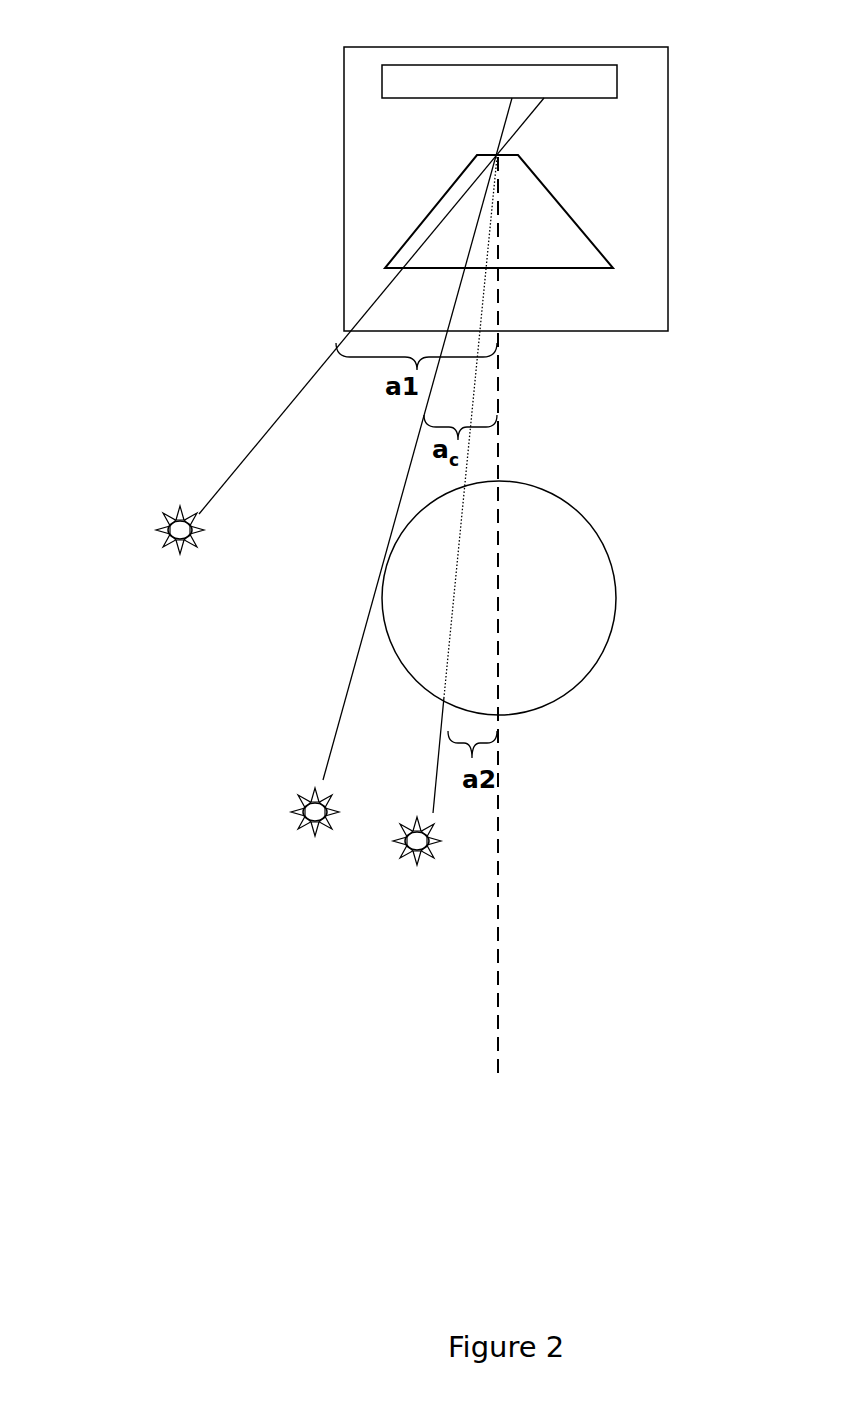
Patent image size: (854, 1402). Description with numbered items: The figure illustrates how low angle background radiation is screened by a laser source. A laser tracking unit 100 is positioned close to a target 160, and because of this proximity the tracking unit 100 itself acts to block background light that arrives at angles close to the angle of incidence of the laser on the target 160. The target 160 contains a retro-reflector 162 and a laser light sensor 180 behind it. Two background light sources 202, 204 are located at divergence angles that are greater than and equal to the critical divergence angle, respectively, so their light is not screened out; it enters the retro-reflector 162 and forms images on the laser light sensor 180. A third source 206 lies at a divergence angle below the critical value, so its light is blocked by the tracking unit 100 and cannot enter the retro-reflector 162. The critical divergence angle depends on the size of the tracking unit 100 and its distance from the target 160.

The laser tracking unit 100 is at (611, 634).
The target 160 is at (668, 247).
The retro-reflector 162 is at (543, 192).
The laser light sensor 180 is at (617, 76).
The background light source 202 is at (168, 546).
The background light source 204 is at (300, 820).
The source 206 is at (418, 856).